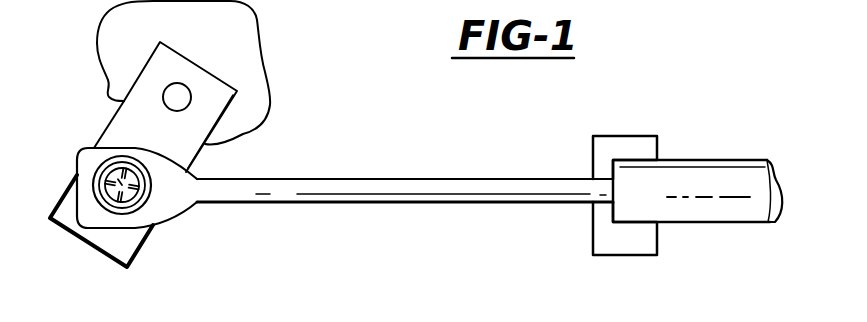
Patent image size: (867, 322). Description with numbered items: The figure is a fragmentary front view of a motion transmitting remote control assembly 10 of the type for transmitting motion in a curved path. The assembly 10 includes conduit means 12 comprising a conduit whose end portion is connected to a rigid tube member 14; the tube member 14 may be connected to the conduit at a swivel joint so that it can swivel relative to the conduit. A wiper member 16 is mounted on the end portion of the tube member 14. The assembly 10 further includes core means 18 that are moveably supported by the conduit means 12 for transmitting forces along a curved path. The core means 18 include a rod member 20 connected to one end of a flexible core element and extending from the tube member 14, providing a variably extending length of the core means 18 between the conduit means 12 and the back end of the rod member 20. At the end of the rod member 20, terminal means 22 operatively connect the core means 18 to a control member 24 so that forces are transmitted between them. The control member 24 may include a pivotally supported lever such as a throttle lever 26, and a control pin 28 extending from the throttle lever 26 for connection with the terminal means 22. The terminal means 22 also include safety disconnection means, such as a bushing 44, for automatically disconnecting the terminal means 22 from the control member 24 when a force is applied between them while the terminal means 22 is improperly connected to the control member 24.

The motion transmitting remote control assembly 10 is at (415, 188).
The conduit means 12 is at (707, 153).
The rigid tube member 14 is at (770, 163).
The wiper member 16 is at (613, 135).
The core means 18 is at (500, 171).
The rod member 20 is at (408, 188).
The terminal means 22 is at (166, 230).
The control member 24 is at (206, 61).
The throttle lever 26 is at (118, 100).
The control pin 28 is at (107, 170).
The bushing 44 is at (96, 208).